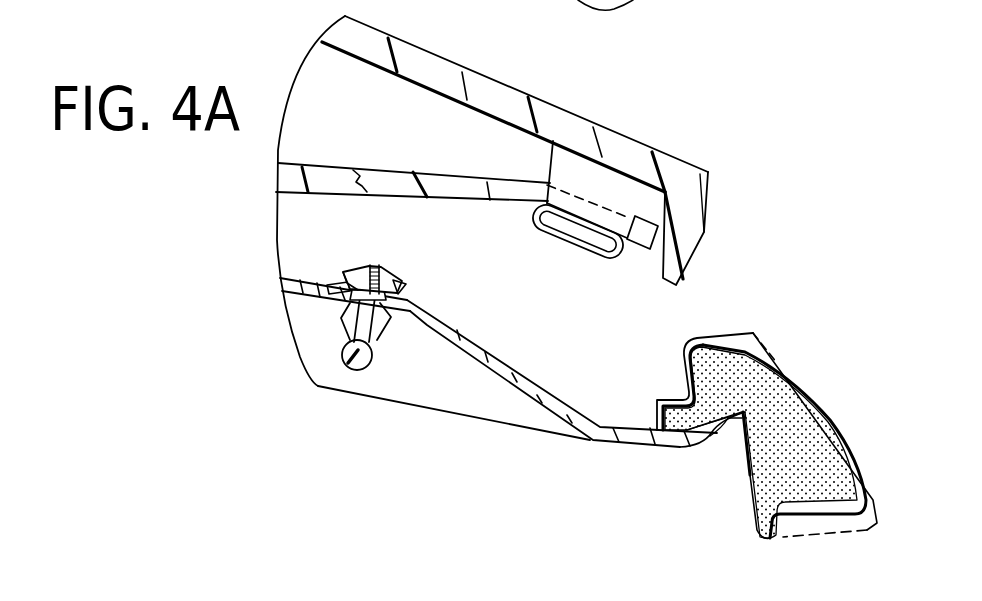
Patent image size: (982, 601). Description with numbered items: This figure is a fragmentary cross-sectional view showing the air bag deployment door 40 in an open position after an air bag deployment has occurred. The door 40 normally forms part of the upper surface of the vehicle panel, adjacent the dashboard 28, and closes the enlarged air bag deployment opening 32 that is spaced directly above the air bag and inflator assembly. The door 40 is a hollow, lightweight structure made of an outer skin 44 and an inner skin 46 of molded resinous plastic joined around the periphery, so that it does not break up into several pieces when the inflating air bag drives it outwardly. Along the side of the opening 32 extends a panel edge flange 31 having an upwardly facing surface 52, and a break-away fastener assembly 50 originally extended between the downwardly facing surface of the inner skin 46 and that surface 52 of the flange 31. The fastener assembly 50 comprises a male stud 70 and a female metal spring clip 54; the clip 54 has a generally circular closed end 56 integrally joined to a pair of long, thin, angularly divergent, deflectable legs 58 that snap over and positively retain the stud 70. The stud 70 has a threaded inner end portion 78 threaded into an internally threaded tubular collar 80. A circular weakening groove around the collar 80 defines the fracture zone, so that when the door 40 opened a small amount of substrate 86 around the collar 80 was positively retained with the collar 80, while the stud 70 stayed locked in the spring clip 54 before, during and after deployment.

The dashboard 28 is at (843, 437).
The panel edge flange 31 is at (292, 294).
The air bag deployment opening 32 is at (682, 363).
The air bag deployment door 40 is at (492, 220).
The outer skin 44 is at (412, 60).
The inner skin 46 is at (308, 167).
The fastener assembly 50 is at (368, 325).
The upwardly facing surface 52 is at (423, 312).
The spring clip 54 is at (377, 350).
The closed end 56 is at (356, 371).
The deflectable legs 58 is at (343, 325).
The male stud 70 is at (350, 360).
The threaded inner end portion 78 is at (378, 264).
The internally threaded tubular collar 80 is at (368, 263).
The substrate 86 is at (407, 291).